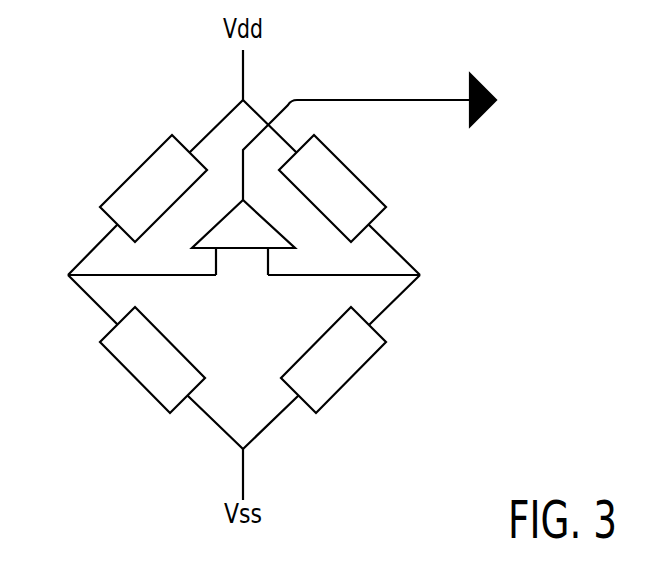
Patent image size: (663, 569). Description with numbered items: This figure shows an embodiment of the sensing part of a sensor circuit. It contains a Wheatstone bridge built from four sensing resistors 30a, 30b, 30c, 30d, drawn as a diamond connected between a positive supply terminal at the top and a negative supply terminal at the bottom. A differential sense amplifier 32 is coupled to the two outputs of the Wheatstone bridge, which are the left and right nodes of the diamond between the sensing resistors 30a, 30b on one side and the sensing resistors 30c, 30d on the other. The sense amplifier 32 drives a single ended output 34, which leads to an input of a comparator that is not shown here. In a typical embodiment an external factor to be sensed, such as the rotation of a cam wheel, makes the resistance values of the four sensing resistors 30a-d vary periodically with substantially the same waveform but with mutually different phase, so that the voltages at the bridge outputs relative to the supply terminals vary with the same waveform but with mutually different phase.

The sensing resistor 30a is at (122, 182).
The sensing resistor 30b is at (132, 380).
The sensing resistor 30c is at (355, 174).
The sensing resistor 30d is at (356, 375).
The differential sense amplifier 32 is at (248, 252).
The single ended output 34 is at (413, 99).